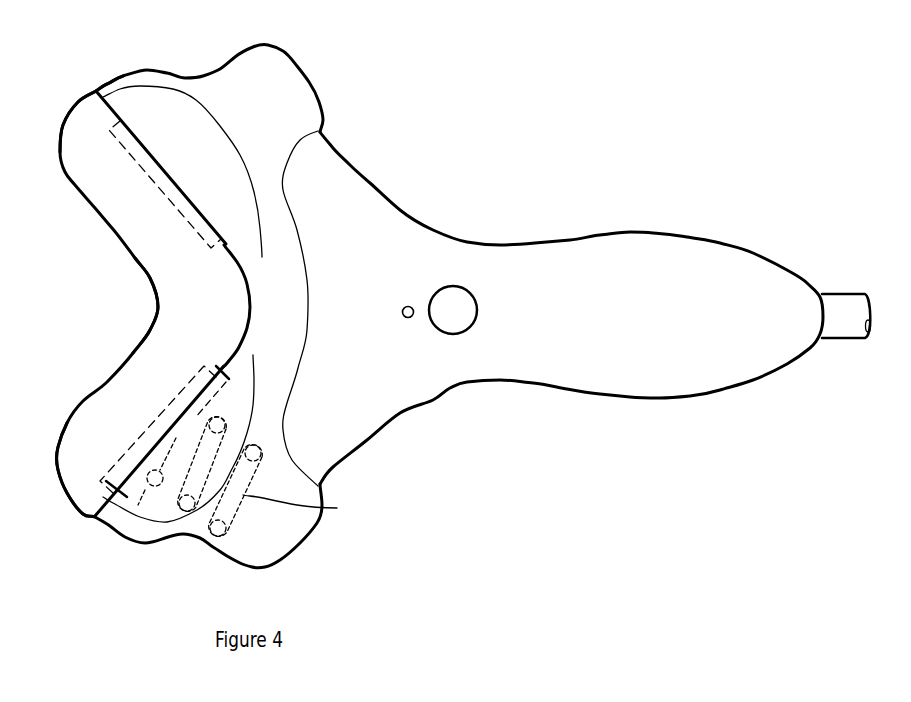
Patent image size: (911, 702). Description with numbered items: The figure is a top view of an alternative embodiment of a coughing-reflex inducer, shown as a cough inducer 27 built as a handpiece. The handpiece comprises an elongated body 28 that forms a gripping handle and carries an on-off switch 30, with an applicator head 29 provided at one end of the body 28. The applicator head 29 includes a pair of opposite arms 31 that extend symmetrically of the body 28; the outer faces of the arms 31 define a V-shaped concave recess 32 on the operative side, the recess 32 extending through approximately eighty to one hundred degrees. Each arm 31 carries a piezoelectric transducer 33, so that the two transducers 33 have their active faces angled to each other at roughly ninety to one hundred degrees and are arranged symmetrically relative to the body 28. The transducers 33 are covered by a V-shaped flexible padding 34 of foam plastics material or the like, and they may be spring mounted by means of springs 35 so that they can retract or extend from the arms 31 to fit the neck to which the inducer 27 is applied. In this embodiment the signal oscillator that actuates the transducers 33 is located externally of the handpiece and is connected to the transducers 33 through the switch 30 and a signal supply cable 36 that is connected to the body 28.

The cough inducer 27 is at (470, 184).
The elongated body 28 is at (550, 367).
The applicator head 29 is at (72, 90).
The on-off switch 30 is at (458, 335).
The arms 31 is at (187, 90).
The V-shaped concave recess 32 is at (114, 302).
The piezoelectric transducer 33 is at (127, 157).
The V-shaped flexible padding 34 is at (73, 473).
The springs 35 is at (251, 477).
The signal supply cable 36 is at (845, 329).